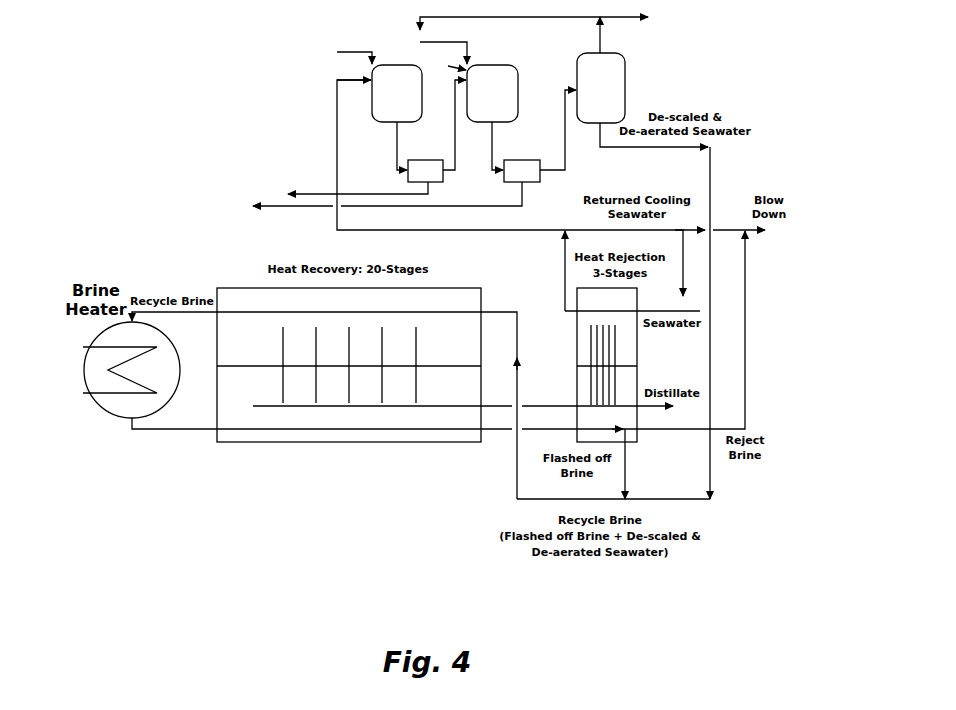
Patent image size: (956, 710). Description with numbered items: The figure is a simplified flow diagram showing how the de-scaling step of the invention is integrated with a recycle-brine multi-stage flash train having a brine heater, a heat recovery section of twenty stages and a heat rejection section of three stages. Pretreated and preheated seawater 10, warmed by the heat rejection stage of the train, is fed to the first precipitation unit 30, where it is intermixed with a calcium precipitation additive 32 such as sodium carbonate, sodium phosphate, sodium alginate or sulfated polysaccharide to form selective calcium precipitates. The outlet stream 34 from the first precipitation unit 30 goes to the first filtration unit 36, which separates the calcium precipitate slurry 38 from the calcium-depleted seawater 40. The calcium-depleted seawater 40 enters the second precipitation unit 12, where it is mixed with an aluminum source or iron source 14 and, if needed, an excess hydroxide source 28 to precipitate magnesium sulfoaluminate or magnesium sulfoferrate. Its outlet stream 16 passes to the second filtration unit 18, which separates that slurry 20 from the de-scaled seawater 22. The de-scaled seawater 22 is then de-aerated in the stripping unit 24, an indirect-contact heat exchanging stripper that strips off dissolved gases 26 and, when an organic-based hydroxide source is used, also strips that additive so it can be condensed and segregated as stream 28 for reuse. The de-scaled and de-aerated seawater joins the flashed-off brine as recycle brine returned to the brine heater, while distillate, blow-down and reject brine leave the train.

The preheated seawater 10 is at (547, 164).
The second precipitation unit 12 is at (492, 93).
The aluminum source or iron source 14 is at (447, 65).
The outlet stream 16 is at (493, 146).
The second filtration unit 18 is at (522, 171).
The slurry 20 is at (376, 198).
The de-scaled seawater 22 is at (558, 130).
The stripping unit 24 is at (601, 88).
The dissolved gases 26 is at (628, 27).
The hydroxide source 28 is at (495, 40).
The first precipitation unit 30 is at (397, 93).
The calcium precipitation additive 32 is at (342, 54).
The outlet stream 34 is at (397, 146).
The first filtration unit 36 is at (425, 171).
The slurry 38 is at (348, 192).
The calcium-depleted seawater 40 is at (454, 125).